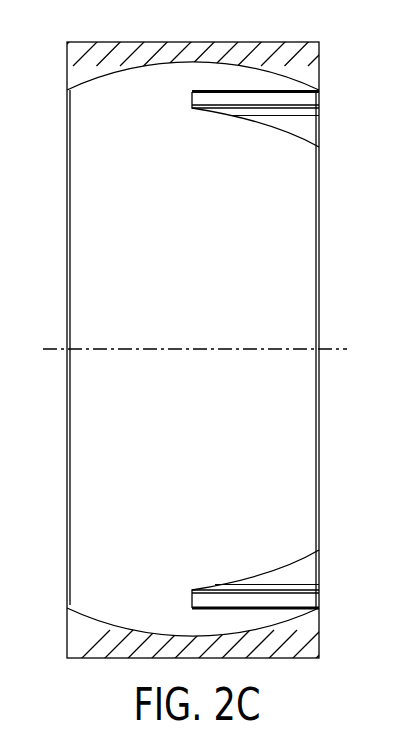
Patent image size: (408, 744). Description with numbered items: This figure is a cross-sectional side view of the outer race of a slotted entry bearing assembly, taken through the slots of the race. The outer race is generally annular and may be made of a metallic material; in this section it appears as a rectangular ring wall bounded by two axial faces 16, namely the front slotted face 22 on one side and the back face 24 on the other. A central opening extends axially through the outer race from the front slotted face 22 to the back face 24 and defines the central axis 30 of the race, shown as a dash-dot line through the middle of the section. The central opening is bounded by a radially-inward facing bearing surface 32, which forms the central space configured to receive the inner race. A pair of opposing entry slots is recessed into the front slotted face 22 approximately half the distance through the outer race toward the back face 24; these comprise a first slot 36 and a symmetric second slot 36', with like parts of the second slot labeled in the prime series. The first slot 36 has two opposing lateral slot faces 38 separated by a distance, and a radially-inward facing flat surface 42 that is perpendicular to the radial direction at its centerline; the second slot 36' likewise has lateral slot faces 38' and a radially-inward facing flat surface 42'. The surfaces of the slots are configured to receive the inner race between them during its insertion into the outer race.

The axial faces 16 is at (67, 58).
The front slotted face 22 is at (320, 639).
The back face 24 is at (67, 626).
The central axis 30 is at (330, 348).
The radially-inward facing bearing surface 32 is at (133, 258).
The first slot 36 is at (274, 153).
The second slot 36' is at (277, 586).
The lateral slot faces 38 is at (271, 100).
The lateral slot faces 38' is at (272, 554).
The radially-inward facing flat surface 42 is at (255, 128).
The radially-inward facing flat surface 42' is at (255, 572).